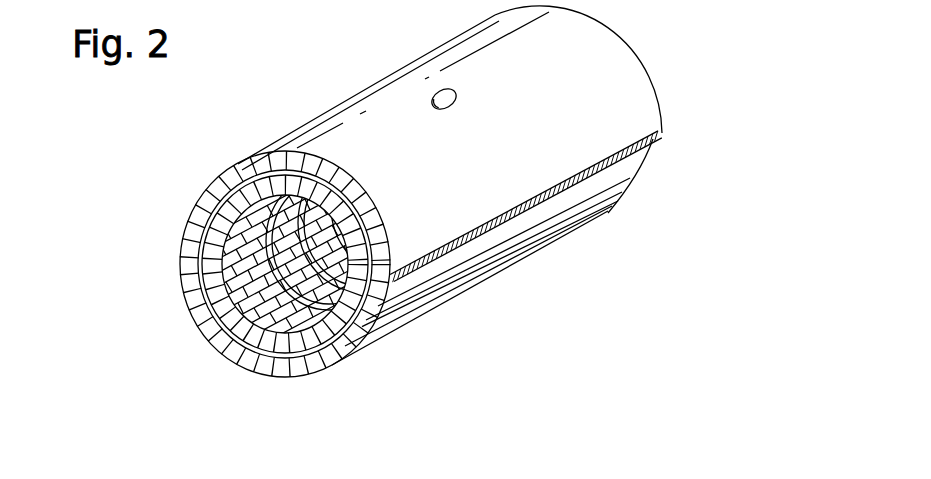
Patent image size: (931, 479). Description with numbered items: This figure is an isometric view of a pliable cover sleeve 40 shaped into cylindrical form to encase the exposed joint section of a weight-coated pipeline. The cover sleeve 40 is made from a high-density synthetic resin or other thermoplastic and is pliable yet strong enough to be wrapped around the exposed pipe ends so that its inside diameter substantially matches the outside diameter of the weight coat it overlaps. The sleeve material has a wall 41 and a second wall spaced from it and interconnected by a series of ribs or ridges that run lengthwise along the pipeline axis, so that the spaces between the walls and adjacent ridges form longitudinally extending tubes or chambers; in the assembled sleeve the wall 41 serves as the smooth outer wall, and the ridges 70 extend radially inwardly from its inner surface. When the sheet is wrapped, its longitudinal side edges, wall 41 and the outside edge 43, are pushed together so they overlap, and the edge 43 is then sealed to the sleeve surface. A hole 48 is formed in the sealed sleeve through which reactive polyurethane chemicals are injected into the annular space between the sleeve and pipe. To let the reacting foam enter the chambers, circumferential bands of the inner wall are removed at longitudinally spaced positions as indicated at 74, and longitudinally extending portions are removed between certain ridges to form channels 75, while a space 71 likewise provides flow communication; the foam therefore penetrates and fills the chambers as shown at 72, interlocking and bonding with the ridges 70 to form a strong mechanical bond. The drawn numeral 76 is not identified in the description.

The cover sleeve 40 is at (333, 80).
The wall 41 is at (602, 50).
The longitudinal side edge 43 is at (658, 136).
The hole 48 is at (457, 88).
The ridges 70 is at (186, 300).
The space 71 is at (219, 347).
The protective foam substance in chambers 72 is at (190, 257).
The circumferential bands 74 is at (244, 370).
The channels 75 is at (194, 206).
The gap layer 76 is at (185, 283).